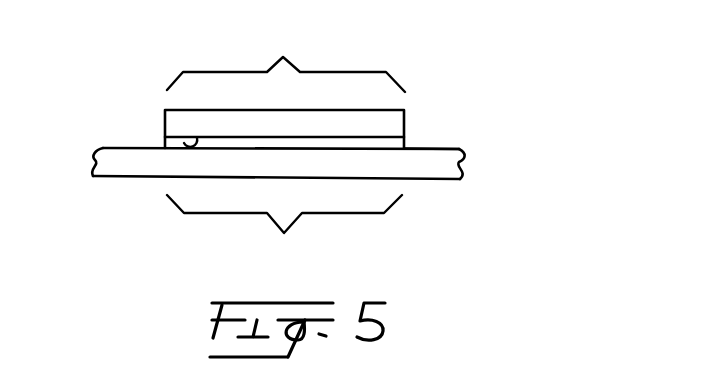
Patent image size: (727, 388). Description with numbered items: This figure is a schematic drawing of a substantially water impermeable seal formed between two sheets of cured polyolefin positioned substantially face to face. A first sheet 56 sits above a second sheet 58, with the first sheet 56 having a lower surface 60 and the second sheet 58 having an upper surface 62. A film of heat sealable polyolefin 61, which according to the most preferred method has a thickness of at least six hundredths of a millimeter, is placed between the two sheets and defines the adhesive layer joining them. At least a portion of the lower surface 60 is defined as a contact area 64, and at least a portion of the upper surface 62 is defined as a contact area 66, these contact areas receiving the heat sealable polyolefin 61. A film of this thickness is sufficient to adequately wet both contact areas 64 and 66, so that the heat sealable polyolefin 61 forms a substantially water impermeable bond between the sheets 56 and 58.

The first sheet of cured polyolefin 56 is at (400, 119).
The second sheet of cured polyolefin 58 is at (122, 158).
The lower surface 60 is at (184, 143).
The film of heat sealable polyolefin 61 is at (405, 145).
The upper surface 62 is at (452, 150).
The contact area 64 is at (286, 56).
The contact area 66 is at (284, 232).